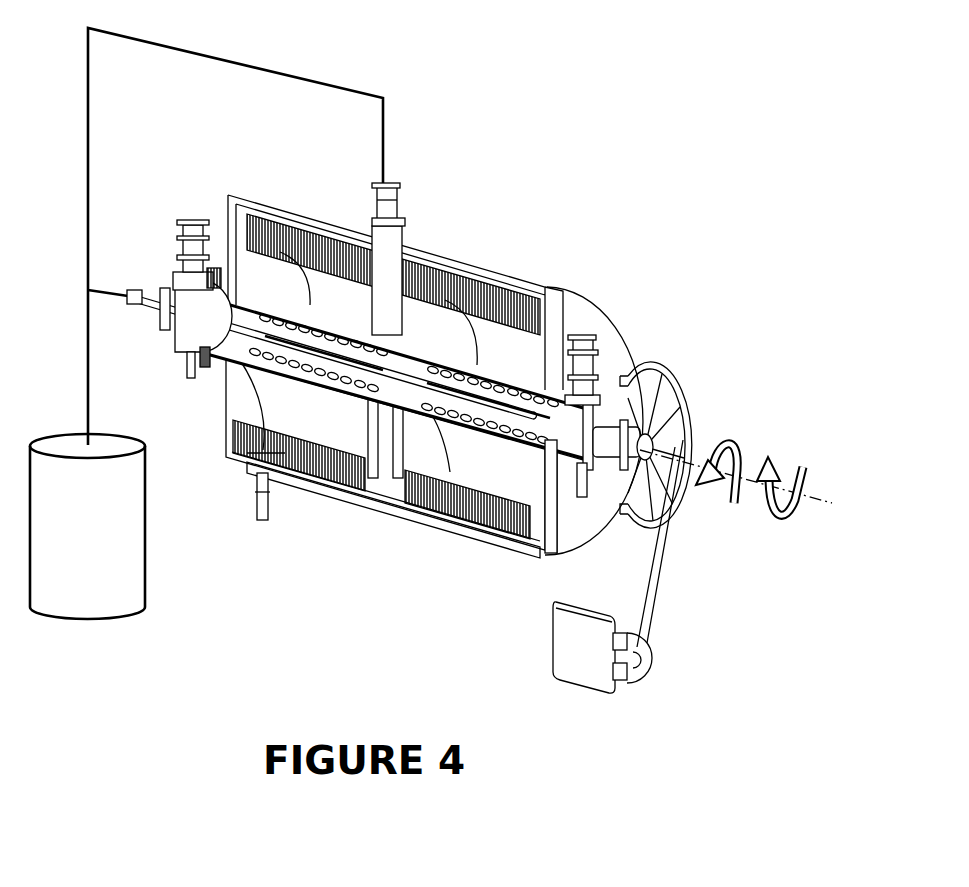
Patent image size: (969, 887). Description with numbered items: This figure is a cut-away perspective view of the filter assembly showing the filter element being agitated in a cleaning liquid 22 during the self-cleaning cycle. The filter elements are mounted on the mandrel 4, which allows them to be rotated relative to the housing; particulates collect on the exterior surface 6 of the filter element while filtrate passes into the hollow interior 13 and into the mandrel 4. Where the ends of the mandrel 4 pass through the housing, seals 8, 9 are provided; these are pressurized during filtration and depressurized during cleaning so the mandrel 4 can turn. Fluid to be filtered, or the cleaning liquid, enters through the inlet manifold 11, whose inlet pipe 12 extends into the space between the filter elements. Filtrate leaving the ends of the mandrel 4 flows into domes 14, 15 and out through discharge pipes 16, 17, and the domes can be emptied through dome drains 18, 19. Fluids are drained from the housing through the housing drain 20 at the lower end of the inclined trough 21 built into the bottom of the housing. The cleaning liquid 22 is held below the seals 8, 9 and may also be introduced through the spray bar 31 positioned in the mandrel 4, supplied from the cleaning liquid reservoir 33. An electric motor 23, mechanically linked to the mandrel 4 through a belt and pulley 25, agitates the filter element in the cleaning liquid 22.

The mandrel 4 is at (238, 348).
The exterior surface 6 is at (347, 233).
The seal 8 is at (227, 365).
The seal 9 is at (547, 463).
The inlet manifold 11 is at (403, 203).
The inlet pipe 12 is at (387, 287).
The hollow interior 13 is at (317, 303).
The dome 14 is at (177, 338).
The dome 15 is at (607, 397).
The discharge pipe 16 is at (193, 217).
The discharge pipe 17 is at (573, 333).
The dome drain 18 is at (190, 378).
The dome drain 19 is at (583, 487).
The housing drain 20 is at (262, 500).
The inclined trough 21 is at (288, 473).
The cleaning liquid 22 is at (447, 473).
The electric motor 23 is at (565, 645).
The pulley 25 is at (647, 380).
The spray bar 31 is at (403, 380).
The cleaning liquid reservoir 33 is at (100, 573).